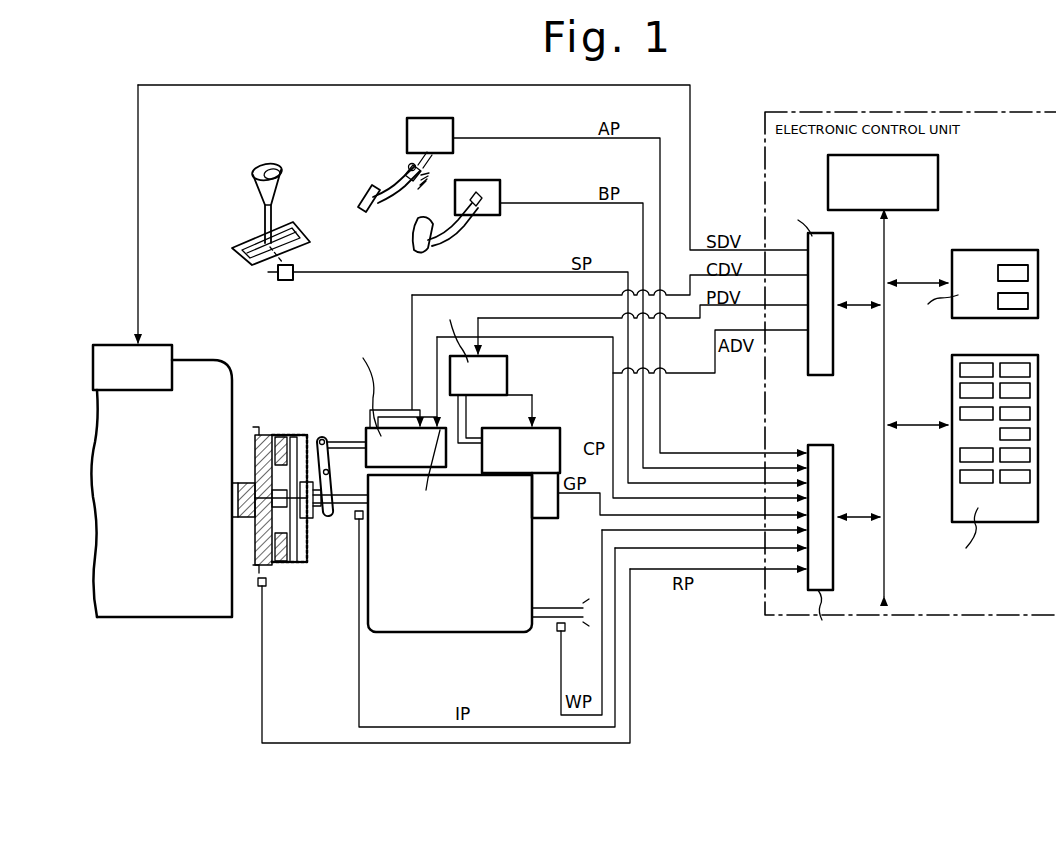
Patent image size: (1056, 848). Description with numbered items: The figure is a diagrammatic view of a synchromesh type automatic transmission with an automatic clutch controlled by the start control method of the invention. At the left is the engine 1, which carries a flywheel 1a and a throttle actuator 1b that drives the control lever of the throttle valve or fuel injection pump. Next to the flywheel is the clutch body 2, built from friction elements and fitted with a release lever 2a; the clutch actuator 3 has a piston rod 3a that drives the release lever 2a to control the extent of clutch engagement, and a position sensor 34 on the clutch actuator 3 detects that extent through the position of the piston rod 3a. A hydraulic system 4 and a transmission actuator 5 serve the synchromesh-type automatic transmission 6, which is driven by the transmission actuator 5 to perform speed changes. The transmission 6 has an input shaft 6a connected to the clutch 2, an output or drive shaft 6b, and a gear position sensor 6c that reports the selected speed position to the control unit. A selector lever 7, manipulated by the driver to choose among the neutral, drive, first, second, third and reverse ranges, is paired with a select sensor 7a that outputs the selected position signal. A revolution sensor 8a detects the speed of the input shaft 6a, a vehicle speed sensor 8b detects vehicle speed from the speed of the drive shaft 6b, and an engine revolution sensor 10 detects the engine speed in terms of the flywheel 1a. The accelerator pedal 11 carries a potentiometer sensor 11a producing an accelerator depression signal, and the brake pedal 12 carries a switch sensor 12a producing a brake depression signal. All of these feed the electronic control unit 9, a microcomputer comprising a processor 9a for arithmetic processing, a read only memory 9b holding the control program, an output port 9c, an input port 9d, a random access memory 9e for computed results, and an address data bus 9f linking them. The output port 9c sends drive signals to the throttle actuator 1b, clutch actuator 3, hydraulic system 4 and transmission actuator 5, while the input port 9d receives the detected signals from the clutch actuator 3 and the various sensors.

The engine 1 is at (210, 364).
The flywheel 1a is at (248, 426).
The throttle actuator 1b is at (106, 344).
The clutch body 2 is at (286, 428).
The release lever 2a is at (321, 440).
The clutch actuator 3 is at (398, 431).
The piston rod 3a is at (343, 442).
The hydraulic system 4 is at (507, 370).
The transmission actuator 5 is at (560, 432).
The synchromesh-type automatic transmission 6 is at (474, 630).
The input shaft 6a is at (340, 512).
The output shaft 6b is at (548, 619).
The gear position sensor 6c is at (548, 520).
The selector lever 7 is at (285, 217).
The select sensor 7a is at (294, 272).
The revolution sensor 8a is at (356, 523).
The vehicle speed sensor 8b is at (565, 631).
The electronic control unit 9 is at (1034, 120).
The processor 9a is at (944, 172).
The read only memory 9b is at (1014, 250).
The output port 9c is at (822, 375).
The input port 9d is at (833, 468).
The random access memory 9e is at (1020, 512).
The address data bus 9f is at (884, 547).
The engine revolution sensor 10 is at (259, 589).
The accelerator pedal 11 is at (372, 185).
The accelerator pedal sensor 11a is at (442, 124).
The brake pedal 12 is at (418, 228).
The brake pedal sensor 12a is at (500, 184).
The position sensor 34 is at (442, 471).